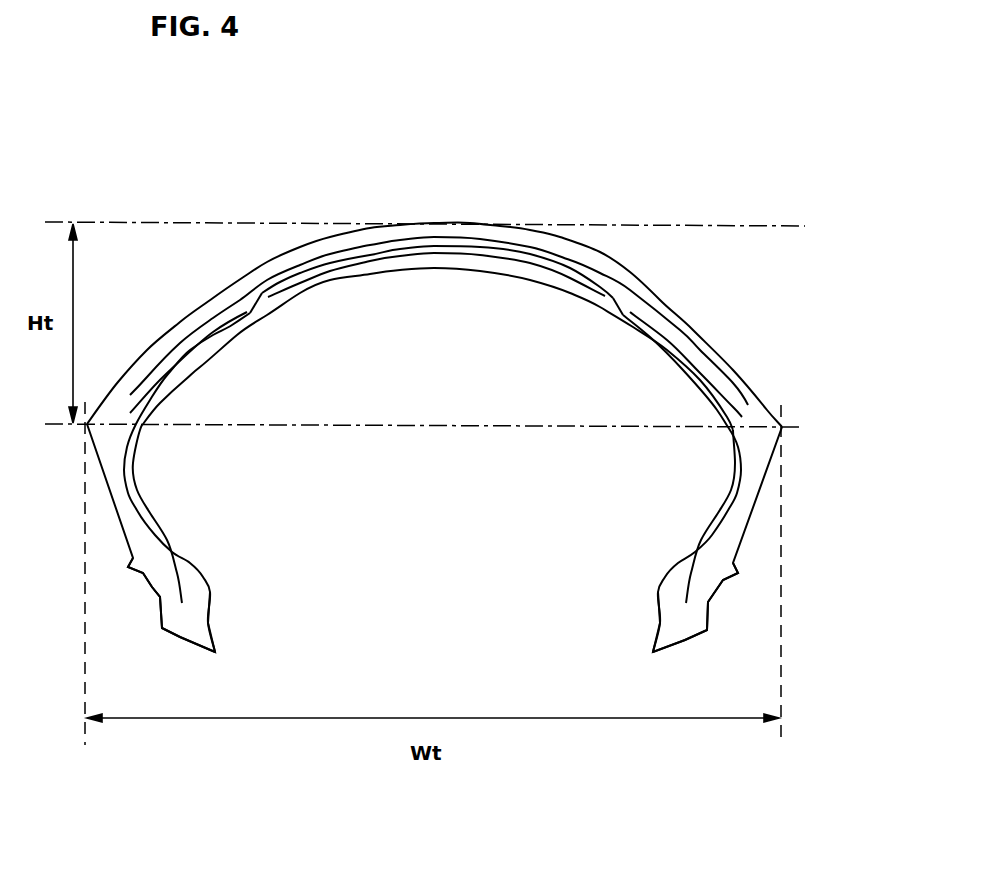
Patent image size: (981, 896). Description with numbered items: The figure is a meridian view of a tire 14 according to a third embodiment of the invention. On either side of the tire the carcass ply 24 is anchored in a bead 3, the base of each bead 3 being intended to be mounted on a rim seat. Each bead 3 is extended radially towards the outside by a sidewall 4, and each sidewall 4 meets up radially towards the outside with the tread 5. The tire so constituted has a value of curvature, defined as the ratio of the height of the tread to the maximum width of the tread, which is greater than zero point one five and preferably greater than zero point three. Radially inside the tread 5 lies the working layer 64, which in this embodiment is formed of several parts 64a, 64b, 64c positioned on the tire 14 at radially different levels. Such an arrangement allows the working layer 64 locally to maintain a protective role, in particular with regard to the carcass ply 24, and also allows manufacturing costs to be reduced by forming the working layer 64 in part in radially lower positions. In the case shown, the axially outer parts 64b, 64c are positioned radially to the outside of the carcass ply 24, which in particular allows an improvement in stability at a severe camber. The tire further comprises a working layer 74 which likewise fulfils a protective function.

The tire 14 is at (541, 192).
The tread 5 is at (313, 242).
The sidewall 4 is at (120, 517).
The bead 3 is at (192, 602).
The carcass ply 24 is at (153, 537).
The working layer 74 is at (573, 266).
The working layer 64 is at (512, 283).
The part of working layer 64a is at (416, 258).
The axially outer part of working layer 64b is at (214, 333).
The axially outer part of working layer 64c is at (663, 337).